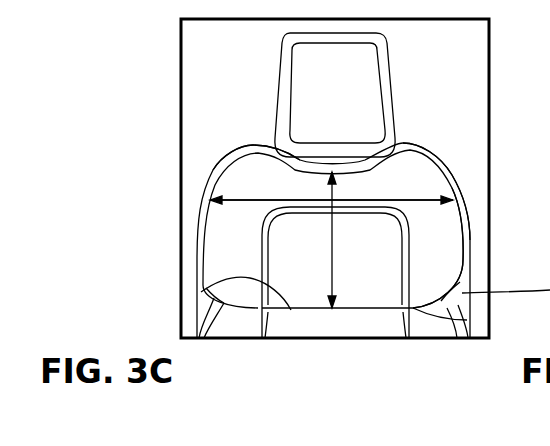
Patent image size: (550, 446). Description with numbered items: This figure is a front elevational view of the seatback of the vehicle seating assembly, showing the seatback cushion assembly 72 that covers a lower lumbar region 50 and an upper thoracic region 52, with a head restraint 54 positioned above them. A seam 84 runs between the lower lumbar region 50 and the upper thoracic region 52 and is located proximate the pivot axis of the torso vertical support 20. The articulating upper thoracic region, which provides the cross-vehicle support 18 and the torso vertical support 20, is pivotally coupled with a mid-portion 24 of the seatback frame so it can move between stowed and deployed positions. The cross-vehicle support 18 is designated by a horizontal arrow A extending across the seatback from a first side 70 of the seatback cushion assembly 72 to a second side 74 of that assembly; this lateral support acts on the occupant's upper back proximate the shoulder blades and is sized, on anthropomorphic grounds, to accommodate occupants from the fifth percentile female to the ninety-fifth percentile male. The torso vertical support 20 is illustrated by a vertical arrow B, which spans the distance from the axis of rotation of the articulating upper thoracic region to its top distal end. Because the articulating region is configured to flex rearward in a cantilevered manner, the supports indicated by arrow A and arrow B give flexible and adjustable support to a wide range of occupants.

The torso vertical support 20 is at (395, 172).
The head restraint 54 is at (303, 73).
The seatback cushion assembly 72 is at (260, 172).
The second side 74 is at (468, 217).
The cross-vehicle support 18 is at (457, 253).
The upper thoracic region 52 is at (372, 265).
The lower lumbar region 50 is at (306, 335).
The seam 84 is at (243, 277).
The mid-portion 24 is at (455, 320).
The first side 70 is at (210, 202).
The arrow A is at (408, 200).
The arrow B is at (332, 242).